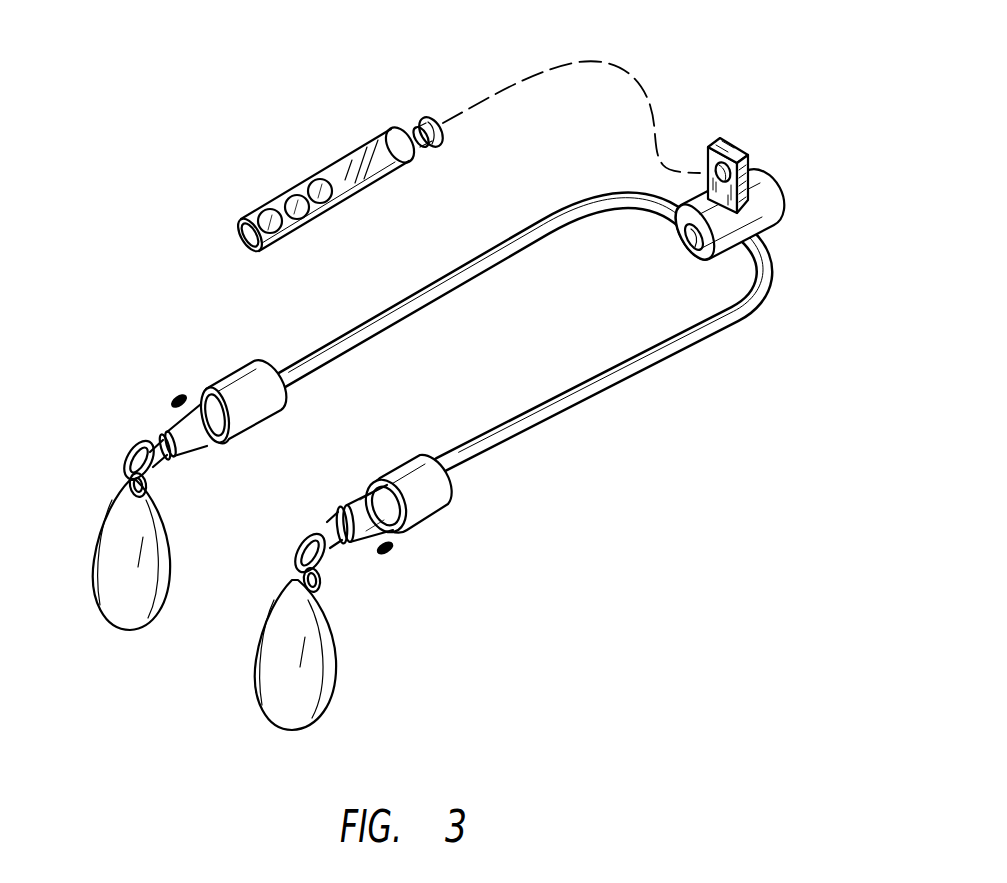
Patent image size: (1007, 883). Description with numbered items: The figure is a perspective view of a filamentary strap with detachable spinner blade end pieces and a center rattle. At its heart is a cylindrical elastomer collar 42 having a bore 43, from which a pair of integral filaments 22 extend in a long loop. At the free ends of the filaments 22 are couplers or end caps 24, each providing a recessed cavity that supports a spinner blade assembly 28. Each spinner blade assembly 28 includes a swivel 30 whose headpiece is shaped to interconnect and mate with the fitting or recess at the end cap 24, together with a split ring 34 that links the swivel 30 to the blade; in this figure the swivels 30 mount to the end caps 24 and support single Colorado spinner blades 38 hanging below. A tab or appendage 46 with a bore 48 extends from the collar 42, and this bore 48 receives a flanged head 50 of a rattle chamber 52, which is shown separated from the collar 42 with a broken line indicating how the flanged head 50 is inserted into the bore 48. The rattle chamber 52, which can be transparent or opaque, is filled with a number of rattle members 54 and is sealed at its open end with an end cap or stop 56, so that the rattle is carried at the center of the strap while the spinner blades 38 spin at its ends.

The filaments 22 is at (443, 300).
The end caps 24 is at (368, 470).
The spinner blade assembly 28 is at (177, 400).
The swivel 30 is at (223, 443).
The split ring 34 is at (153, 477).
The Colorado spinner blades 38 is at (290, 584).
The elastomer collar 42 is at (782, 193).
The bore 43 is at (689, 239).
The tab 46 is at (735, 150).
The bore 48 is at (706, 172).
The flanged head 50 is at (428, 117).
The rattle chamber 52 is at (362, 148).
The rattle members 54 is at (275, 226).
The end cap 56 is at (237, 240).